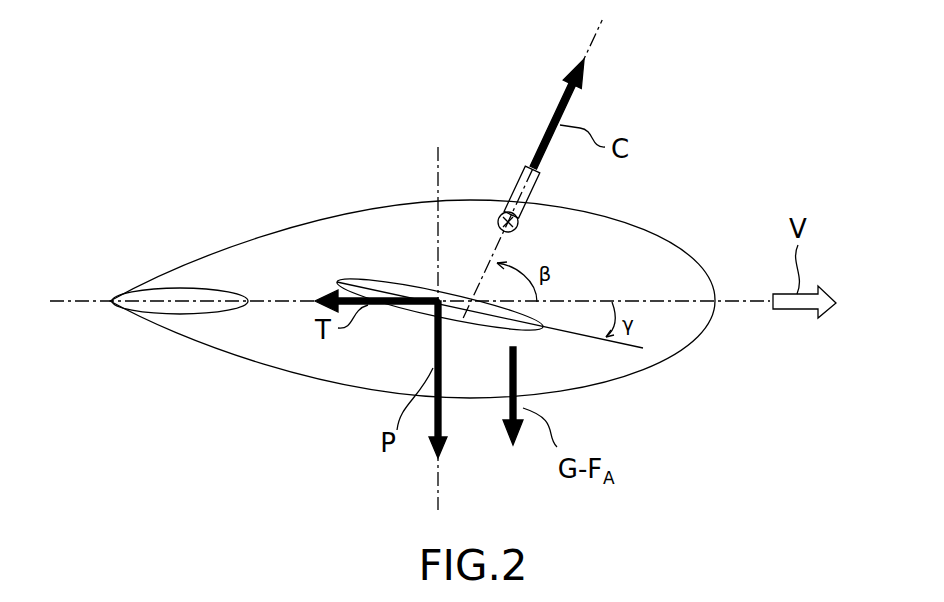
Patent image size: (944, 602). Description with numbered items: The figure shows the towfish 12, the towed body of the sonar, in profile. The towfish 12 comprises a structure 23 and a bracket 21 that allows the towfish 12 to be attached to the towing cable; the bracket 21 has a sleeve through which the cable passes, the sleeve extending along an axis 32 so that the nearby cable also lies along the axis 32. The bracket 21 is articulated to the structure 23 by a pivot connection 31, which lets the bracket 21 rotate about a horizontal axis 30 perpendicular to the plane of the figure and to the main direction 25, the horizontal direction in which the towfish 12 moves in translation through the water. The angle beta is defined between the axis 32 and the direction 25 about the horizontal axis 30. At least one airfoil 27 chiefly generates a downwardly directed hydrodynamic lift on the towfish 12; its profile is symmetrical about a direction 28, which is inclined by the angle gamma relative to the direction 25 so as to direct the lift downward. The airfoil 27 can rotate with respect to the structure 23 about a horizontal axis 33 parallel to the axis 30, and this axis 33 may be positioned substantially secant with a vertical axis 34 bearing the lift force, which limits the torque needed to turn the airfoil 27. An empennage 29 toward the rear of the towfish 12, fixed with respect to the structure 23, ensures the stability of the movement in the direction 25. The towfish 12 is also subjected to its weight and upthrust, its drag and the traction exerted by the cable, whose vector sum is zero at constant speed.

The towfish 12 is at (390, 113).
The bracket 21 is at (523, 173).
The structure 23 is at (295, 243).
The direction 25 is at (80, 300).
The airfoil 27 is at (390, 280).
The direction 28 is at (587, 337).
The empennage 29 is at (187, 288).
The horizontal axis 30 is at (505, 213).
The pivot connection 31 is at (515, 232).
The axis 32 is at (597, 25).
The horizontal axis 33 is at (428, 308).
The vertical axis 34 is at (438, 489).